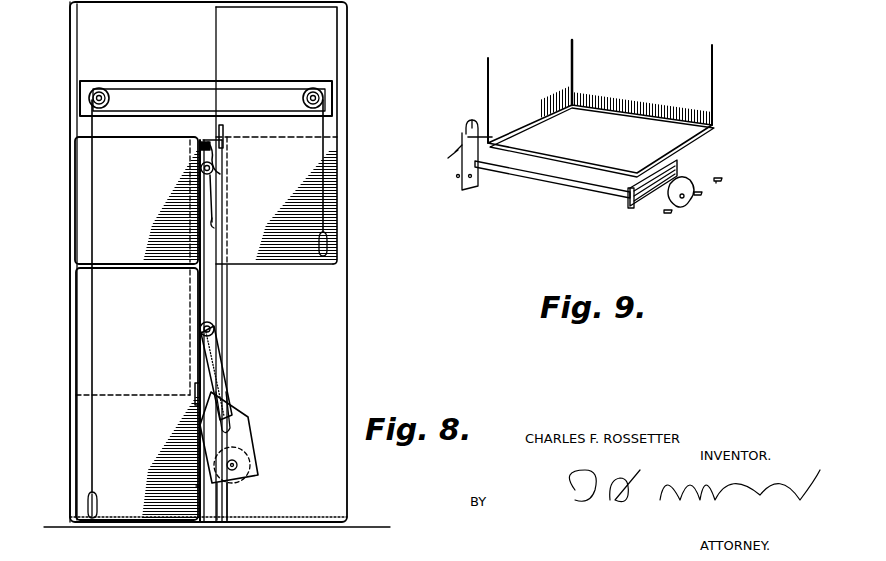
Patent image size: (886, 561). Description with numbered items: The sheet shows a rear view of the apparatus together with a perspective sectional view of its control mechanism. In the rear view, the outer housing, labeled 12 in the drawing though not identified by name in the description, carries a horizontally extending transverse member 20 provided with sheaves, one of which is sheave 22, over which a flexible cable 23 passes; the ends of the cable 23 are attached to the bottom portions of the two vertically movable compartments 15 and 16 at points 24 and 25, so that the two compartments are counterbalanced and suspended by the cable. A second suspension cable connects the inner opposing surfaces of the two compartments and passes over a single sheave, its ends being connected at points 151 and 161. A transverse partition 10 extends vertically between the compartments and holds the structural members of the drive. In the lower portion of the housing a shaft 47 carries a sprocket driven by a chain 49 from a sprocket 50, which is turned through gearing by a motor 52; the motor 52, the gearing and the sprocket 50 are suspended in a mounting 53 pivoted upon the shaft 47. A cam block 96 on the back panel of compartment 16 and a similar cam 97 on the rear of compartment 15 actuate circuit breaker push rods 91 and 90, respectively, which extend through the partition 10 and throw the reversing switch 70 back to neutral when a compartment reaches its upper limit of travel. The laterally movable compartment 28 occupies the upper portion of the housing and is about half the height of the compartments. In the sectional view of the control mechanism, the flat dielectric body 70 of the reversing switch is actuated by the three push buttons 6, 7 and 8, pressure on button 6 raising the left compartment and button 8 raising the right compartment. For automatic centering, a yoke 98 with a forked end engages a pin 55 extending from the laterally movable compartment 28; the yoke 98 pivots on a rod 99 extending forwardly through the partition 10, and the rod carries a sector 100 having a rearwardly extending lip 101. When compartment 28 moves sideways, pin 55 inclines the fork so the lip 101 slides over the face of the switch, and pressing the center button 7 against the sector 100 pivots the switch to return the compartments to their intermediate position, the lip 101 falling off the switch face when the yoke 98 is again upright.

In FIG. 8, the cabinet 12 is at (78, 48).
In FIG. 8, the compartment 15 is at (318, 47).
In FIG. 8, the transverse member 20 is at (255, 81).
In FIG. 8, the sheave 22 is at (90, 98).
In FIG. 8, the laterally movable compartment 28 is at (91, 172).
In FIG. 9, the laterally movable compartment 28 is at (716, 86).
In FIG. 8, the compartment 16 is at (86, 332).
In FIG. 8, the flexible cable 23 is at (98, 378).
In FIG. 8, the cable attachment point 25 is at (86, 503).
In FIG. 8, the cable attachment point 24 is at (330, 240).
In FIG. 8, the partition 10 is at (221, 293).
In FIG. 8, the cam 97 is at (225, 133).
In FIG. 8, the push rod 91 is at (198, 150).
In FIG. 8, the push rod 90 is at (214, 150).
In FIG. 8, the point of connection 151 is at (215, 224).
In FIG. 8, the shaft 47 is at (214, 330).
In FIG. 8, the chain 49 is at (222, 359).
In FIG. 8, the mounting 53 is at (256, 426).
In FIG. 8, the sprocket 50 is at (232, 418).
In FIG. 8, the motor 52 is at (246, 466).
In FIG. 8, the cam block 96 is at (194, 387).
In FIG. 8, the point of connection 161 is at (199, 486).
In FIG. 9, the pin 55 is at (488, 130).
In FIG. 9, the yoke 98 is at (466, 173).
In FIG. 9, the rod 99 is at (560, 185).
In FIG. 9, the lip 101 is at (672, 173).
In FIG. 9, the reversing switch body member 70 is at (632, 208).
In FIG. 9, the sector 100 is at (682, 200).
In FIG. 9, the push button 8 is at (723, 181).
In FIG. 9, the push button 7 is at (703, 195).
In FIG. 9, the push button 6 is at (670, 216).